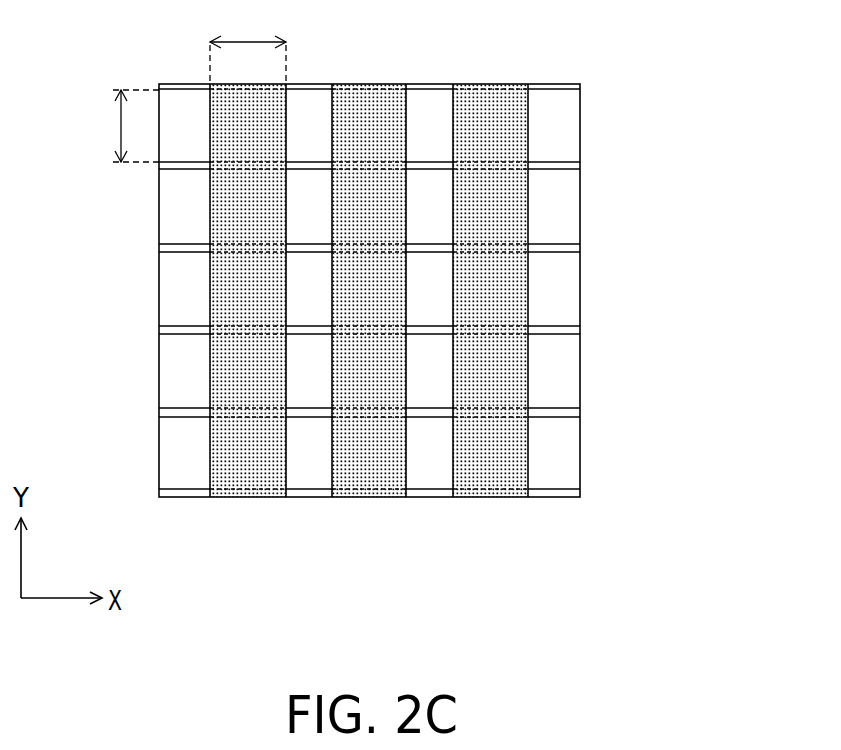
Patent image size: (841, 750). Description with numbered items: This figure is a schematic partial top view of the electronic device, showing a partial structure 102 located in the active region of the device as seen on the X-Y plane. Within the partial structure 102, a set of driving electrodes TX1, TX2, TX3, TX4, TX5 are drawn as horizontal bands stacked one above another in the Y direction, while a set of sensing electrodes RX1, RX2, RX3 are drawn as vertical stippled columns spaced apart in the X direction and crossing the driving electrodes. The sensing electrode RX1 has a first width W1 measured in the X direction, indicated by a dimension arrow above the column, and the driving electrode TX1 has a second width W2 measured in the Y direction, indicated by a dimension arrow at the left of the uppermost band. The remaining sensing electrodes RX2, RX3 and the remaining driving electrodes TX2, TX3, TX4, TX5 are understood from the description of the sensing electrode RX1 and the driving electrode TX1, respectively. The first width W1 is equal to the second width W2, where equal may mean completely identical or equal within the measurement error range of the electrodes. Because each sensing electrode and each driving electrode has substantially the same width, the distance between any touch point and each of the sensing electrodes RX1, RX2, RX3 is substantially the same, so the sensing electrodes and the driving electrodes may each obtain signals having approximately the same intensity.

The partial structure 102 is at (727, 605).
The driving electrode TX1 is at (565, 124).
The driving electrode TX2 is at (565, 207).
The driving electrode TX3 is at (565, 288).
The driving electrode TX4 is at (565, 370).
The driving electrode TX5 is at (565, 454).
The sensing electrode RX1 is at (245, 479).
The sensing electrode RX2 is at (363, 479).
The sensing electrode RX3 is at (493, 479).
The first width W1 is at (248, 43).
The second width W2 is at (121, 126).